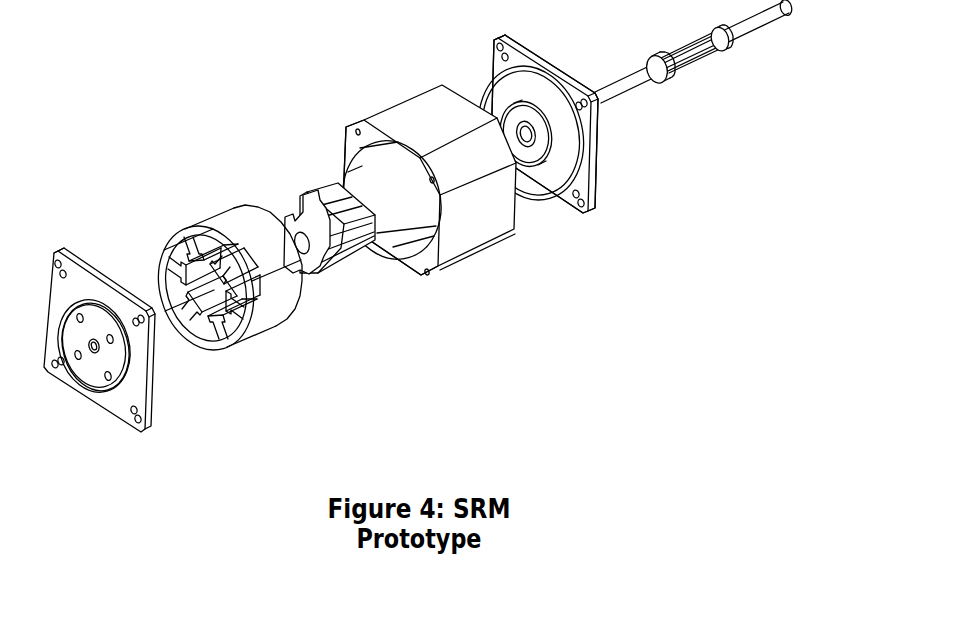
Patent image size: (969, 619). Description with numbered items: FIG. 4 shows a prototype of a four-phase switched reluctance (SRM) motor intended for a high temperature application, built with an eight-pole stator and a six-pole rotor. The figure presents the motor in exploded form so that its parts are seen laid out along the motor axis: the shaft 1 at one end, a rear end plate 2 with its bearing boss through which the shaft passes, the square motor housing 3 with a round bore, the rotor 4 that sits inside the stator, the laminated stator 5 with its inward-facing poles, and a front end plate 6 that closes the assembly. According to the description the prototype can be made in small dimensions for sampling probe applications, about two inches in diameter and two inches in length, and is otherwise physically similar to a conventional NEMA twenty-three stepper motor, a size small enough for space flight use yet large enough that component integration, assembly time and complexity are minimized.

The shaft 1 is at (720, 55).
The rear end plate with bearing 2 is at (597, 210).
The motor housing 3 is at (487, 252).
The rotor 4 is at (352, 266).
The stator 5 is at (268, 338).
The front end plate 6 is at (153, 433).